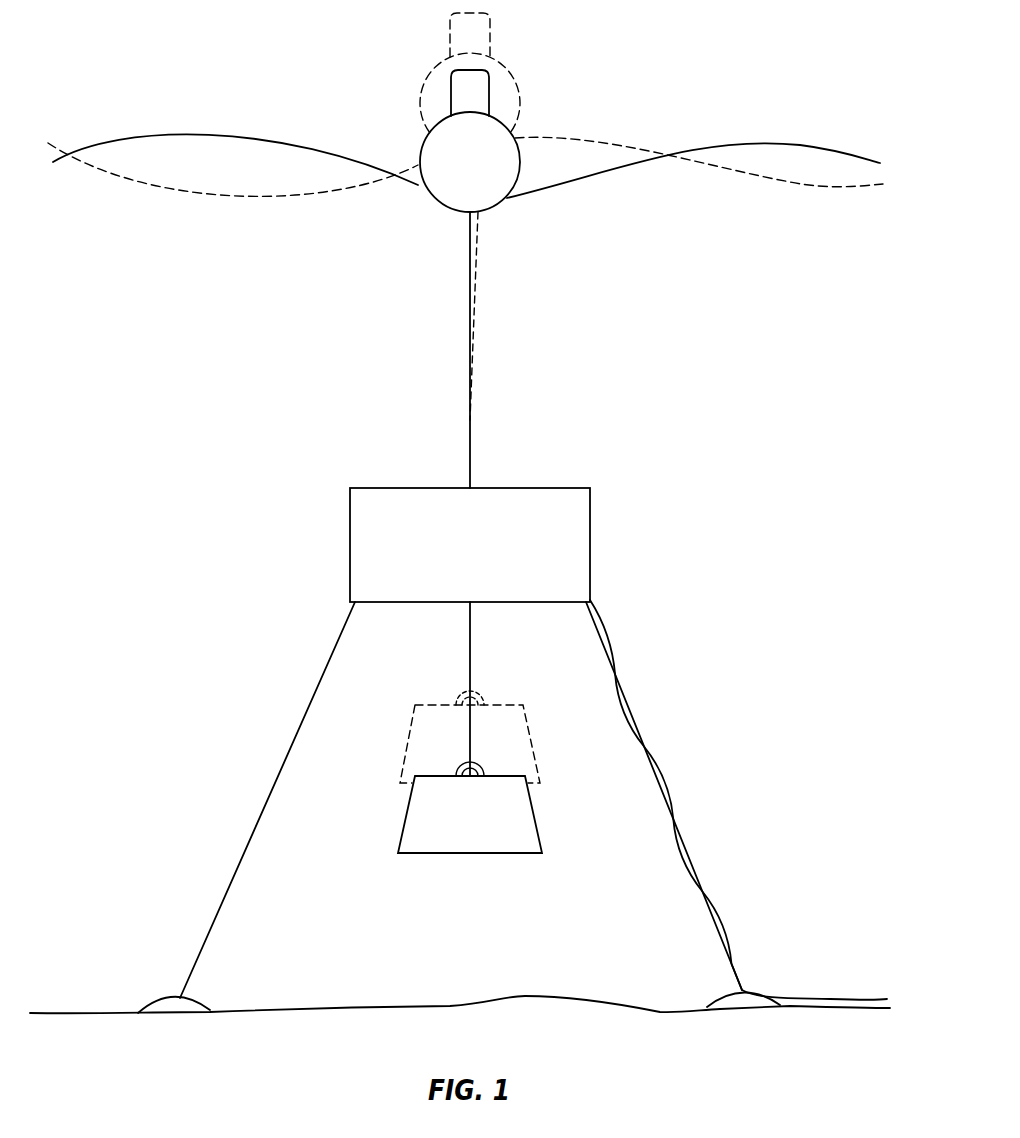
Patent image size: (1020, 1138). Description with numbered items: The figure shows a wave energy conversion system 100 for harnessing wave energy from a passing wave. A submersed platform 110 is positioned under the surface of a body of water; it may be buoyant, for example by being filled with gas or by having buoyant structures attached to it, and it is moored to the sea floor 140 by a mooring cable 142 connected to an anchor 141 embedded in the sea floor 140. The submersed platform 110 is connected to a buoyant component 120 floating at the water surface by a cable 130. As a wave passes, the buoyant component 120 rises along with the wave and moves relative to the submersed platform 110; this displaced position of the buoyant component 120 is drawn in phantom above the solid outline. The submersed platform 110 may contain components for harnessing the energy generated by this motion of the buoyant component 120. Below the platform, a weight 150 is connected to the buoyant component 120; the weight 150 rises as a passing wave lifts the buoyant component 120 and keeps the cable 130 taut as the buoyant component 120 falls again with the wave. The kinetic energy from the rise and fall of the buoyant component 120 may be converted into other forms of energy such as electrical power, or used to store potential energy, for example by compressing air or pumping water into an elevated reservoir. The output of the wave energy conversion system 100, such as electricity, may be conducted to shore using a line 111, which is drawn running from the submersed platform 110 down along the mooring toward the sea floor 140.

The wave energy conversion system 100 is at (248, 384).
The submersed platform 110 is at (486, 559).
The line 111 is at (630, 688).
The buoyant component 120 is at (484, 177).
The cable 130 is at (467, 278).
The sea floor 140 is at (486, 1044).
The anchor 141 is at (163, 1005).
The mooring cable 142 is at (282, 772).
The weight 150 is at (486, 829).